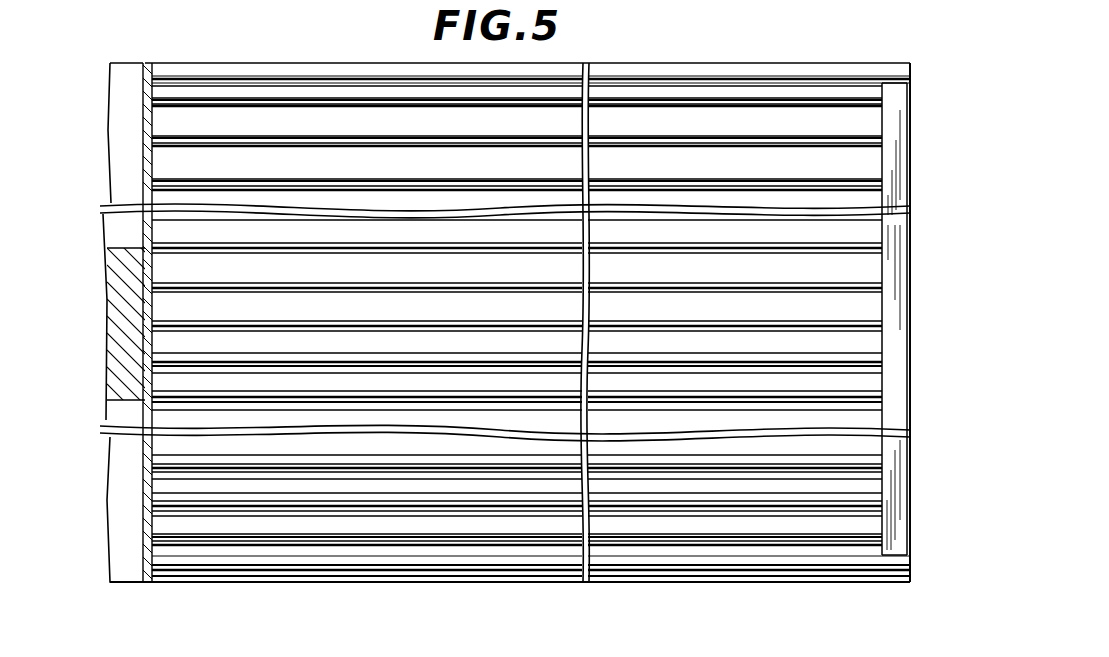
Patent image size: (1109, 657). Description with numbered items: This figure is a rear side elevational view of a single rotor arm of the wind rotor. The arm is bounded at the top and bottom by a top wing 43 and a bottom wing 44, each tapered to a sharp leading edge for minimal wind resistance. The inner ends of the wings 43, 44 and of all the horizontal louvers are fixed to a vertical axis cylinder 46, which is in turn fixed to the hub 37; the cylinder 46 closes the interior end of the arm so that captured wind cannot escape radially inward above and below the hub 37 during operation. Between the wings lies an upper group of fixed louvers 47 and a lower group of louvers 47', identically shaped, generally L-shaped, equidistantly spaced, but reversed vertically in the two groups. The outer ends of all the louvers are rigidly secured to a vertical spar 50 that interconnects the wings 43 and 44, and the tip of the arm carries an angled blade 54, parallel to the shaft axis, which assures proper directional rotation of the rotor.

The hub 37 is at (120, 247).
The top blade or wing 43 is at (683, 65).
The bottom blade or wing 44 is at (654, 583).
The vertical axis cylinder 46 is at (145, 87).
The upper group of fixed louvers 47 is at (517, 209).
The lower group of fixed louvers 47' is at (517, 541).
The vertical spar 50 is at (890, 158).
The tip blade 54 is at (912, 190).